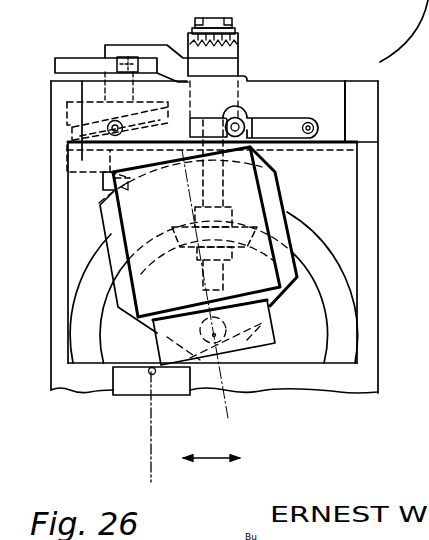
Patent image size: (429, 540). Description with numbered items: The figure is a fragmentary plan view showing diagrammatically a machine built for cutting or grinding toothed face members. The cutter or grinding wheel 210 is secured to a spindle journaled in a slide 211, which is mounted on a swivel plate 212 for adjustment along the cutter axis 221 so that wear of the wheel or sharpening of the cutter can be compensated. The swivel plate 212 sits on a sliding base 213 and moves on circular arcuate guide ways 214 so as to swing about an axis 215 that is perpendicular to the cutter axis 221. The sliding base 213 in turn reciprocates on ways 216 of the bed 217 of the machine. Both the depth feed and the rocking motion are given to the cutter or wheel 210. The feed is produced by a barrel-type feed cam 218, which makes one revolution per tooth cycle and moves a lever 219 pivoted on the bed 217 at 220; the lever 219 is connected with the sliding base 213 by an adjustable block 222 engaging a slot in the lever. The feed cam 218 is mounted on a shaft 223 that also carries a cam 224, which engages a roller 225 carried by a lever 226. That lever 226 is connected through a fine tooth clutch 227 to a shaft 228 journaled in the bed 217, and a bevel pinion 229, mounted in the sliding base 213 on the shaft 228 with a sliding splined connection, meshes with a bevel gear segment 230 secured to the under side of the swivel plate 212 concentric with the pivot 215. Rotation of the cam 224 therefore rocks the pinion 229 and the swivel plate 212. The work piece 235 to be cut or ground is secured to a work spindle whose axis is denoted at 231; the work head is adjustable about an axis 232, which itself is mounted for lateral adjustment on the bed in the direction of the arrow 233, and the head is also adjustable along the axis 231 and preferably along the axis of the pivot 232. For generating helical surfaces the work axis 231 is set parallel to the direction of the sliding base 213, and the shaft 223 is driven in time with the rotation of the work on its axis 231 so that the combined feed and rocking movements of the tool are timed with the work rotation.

The cutter or grinding wheel 210 is at (258, 328).
The slide 211 is at (247, 192).
The swivel plate 212 is at (277, 228).
The sliding base 213 is at (343, 231).
The circular arcuate guide ways 214 is at (337, 295).
The axis (pivot) 215 is at (212, 345).
The ways 216 is at (347, 128).
The bed 217 is at (282, 380).
The feed cam 218 is at (65, 112).
The lever 219 is at (283, 111).
The pivot 220 is at (328, 114).
The cutter axis 221 is at (190, 208).
The adjustable block 222 is at (236, 117).
The shaft 223 is at (106, 182).
The cam 224 is at (63, 66).
The roller 225 is at (117, 67).
The lever 226 is at (137, 50).
The fine tooth clutch 227 is at (238, 42).
The shaft 228 is at (187, 178).
The bevel pinion 229 is at (191, 240).
The bevel gear segment 230 is at (152, 277).
The work spindle axis 231 is at (150, 458).
The axis (work head pivot) 232 is at (153, 375).
The arrow 233 is at (212, 458).
The work piece 235 is at (142, 383).